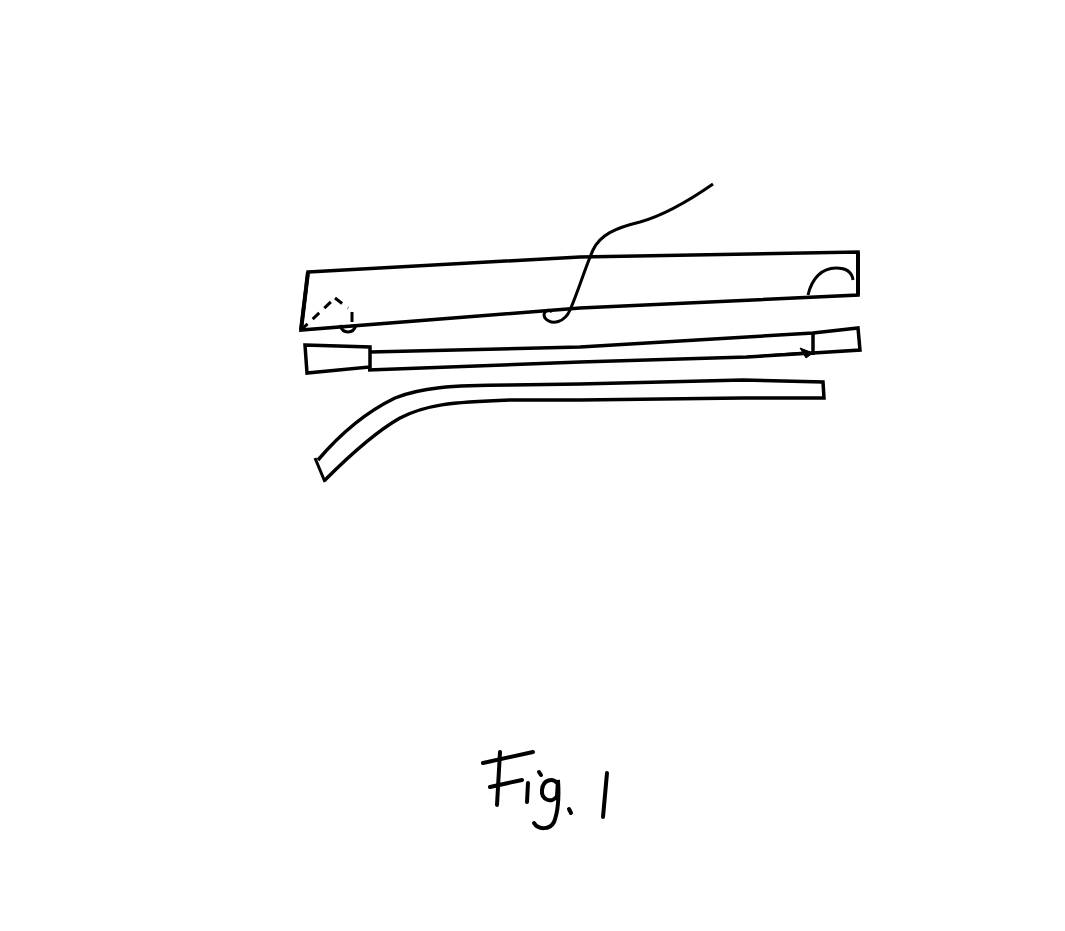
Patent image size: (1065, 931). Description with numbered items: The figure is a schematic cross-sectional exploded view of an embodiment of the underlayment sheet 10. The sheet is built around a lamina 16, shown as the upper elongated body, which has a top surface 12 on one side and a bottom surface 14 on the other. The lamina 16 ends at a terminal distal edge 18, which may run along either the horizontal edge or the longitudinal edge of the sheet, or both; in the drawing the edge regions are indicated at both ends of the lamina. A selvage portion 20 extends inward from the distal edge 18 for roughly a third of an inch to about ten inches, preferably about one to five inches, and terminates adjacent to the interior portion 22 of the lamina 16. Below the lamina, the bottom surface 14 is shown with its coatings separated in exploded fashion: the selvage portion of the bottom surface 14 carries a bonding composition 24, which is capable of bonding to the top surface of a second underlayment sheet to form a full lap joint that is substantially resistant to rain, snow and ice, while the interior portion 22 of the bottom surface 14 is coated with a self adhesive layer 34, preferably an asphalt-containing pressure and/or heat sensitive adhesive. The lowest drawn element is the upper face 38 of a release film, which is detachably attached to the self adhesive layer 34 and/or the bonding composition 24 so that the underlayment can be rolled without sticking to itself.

The underlayment sheet 10 is at (935, 87).
The top surface 12 is at (355, 268).
The bottom surface 14 is at (823, 300).
The lamina 16 is at (290, 320).
The terminal distal edge 18 is at (303, 296).
The selvage portion 20 is at (350, 306).
The interior portion 22 is at (669, 232).
The bonding composition 24 is at (842, 357).
The self adhesive layer 34 is at (740, 358).
The upper face 38 is at (358, 424).